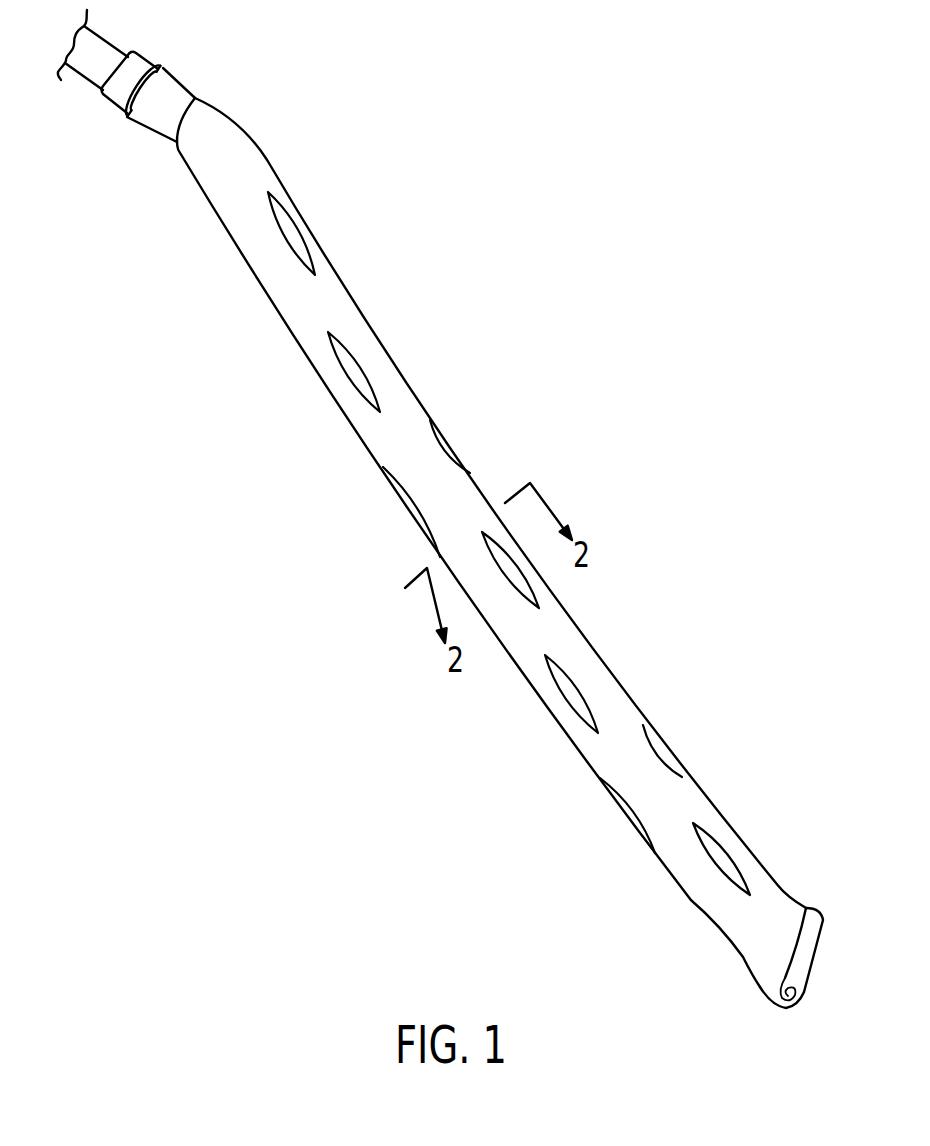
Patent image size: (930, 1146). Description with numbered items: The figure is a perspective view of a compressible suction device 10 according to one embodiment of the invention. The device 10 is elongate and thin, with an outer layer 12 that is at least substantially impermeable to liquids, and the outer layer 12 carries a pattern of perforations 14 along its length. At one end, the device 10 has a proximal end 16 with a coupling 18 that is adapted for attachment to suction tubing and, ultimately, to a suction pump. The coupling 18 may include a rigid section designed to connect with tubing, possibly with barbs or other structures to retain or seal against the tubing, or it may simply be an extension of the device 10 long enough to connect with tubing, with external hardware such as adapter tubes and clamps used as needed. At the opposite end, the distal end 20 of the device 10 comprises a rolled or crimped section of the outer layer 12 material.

The compressible suction device 10 is at (437, 151).
The outer layer 12 is at (360, 302).
The perforations 14 is at (290, 227).
The proximal end 16 is at (190, 78).
The coupling 18 is at (153, 118).
The distal end 20 is at (822, 956).